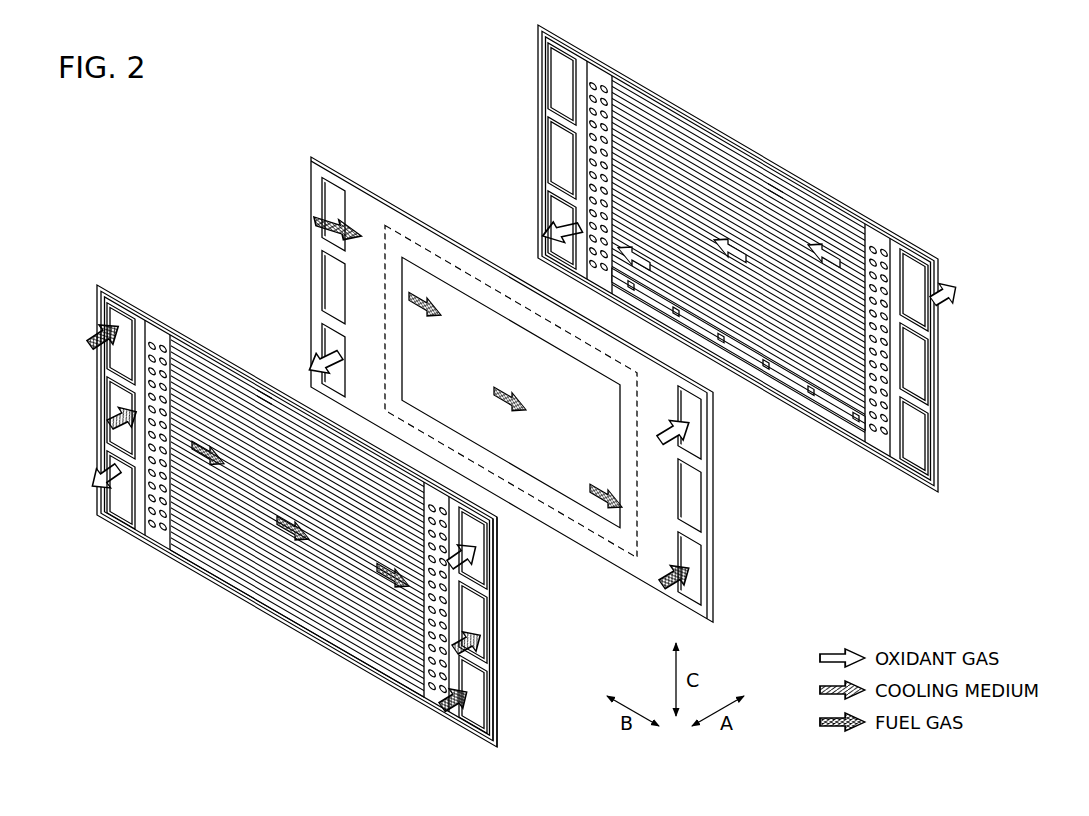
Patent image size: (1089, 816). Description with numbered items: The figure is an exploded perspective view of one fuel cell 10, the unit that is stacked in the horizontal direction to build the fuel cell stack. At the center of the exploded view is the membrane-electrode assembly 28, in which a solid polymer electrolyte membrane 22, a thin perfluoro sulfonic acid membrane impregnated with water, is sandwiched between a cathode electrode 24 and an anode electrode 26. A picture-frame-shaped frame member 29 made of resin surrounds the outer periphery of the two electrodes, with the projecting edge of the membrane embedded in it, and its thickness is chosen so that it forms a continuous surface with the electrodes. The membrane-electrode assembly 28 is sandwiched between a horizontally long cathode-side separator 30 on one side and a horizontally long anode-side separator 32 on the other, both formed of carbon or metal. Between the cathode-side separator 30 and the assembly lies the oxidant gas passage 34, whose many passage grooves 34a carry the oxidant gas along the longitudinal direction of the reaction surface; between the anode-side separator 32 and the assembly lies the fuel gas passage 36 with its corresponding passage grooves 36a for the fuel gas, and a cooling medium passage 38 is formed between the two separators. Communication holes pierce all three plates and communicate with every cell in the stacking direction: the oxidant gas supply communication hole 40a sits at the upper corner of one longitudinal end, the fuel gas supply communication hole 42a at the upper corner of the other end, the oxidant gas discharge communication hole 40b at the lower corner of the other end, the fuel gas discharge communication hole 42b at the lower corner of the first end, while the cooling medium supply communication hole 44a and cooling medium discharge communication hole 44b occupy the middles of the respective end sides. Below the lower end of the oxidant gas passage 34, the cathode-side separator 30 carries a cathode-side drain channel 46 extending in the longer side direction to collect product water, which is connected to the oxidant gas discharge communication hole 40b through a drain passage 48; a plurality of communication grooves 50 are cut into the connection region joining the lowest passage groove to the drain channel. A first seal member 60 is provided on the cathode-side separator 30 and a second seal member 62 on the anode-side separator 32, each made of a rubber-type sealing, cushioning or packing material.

The fuel cell 10 is at (172, 131).
The solid polymer electrolyte membrane 22 is at (446, 270).
The cathode electrode 24 is at (480, 330).
The anode electrode 26 is at (505, 345).
The membrane-electrode assembly 28 is at (346, 172).
The frame member 29 is at (372, 208).
The cathode-side separator 30 is at (617, 72).
The anode-side separator 32 is at (120, 283).
The oxidant gas passage 34 is at (725, 178).
The passage grooves 34a is at (775, 192).
The fuel gas passage 36 is at (236, 405).
The passage grooves 36a is at (263, 387).
The cooling medium passage 38 is at (215, 547).
The oxidant gas supply communication hole 40a is at (481, 567).
The oxidant gas discharge communication hole 40b is at (108, 460).
The fuel gas supply communication hole 42a is at (106, 318).
The fuel gas discharge communication hole 42b is at (481, 680).
The cooling medium supply communication hole 44a is at (108, 393).
The cooling medium discharge communication hole 44b is at (481, 605).
The cathode-side drain channel 46 is at (778, 382).
The drain passage 48 is at (565, 292).
The communication grooves 50 is at (828, 402).
The first seal member 60 is at (535, 31).
The second seal member 62 is at (497, 538).